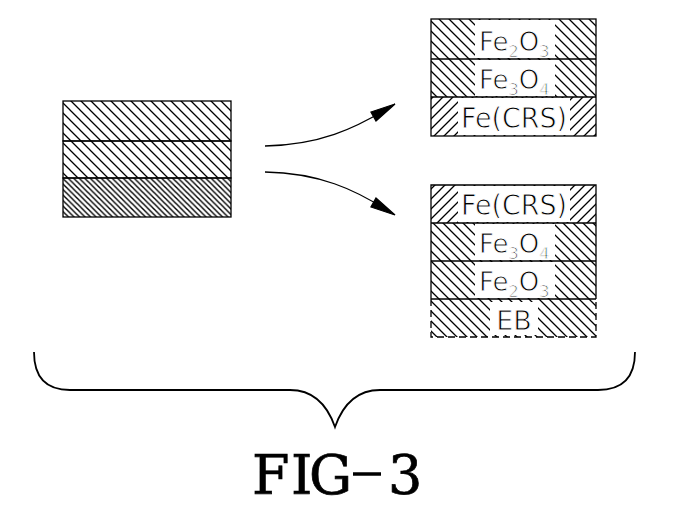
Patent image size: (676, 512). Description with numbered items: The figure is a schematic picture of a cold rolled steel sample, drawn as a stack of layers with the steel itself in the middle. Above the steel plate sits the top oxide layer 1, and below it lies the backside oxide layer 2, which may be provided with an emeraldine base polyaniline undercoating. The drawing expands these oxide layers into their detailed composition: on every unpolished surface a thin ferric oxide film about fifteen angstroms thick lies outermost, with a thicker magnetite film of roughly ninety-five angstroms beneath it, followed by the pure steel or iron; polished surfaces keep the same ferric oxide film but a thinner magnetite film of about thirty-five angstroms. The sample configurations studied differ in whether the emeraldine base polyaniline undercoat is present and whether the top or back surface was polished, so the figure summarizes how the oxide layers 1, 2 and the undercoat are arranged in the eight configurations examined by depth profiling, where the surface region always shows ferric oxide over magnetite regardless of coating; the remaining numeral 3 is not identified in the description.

The top oxide layer 1 is at (147, 121).
The backside oxide layer 2 is at (147, 197).
The Fe(CRS) substrate layer 3 is at (147, 159).